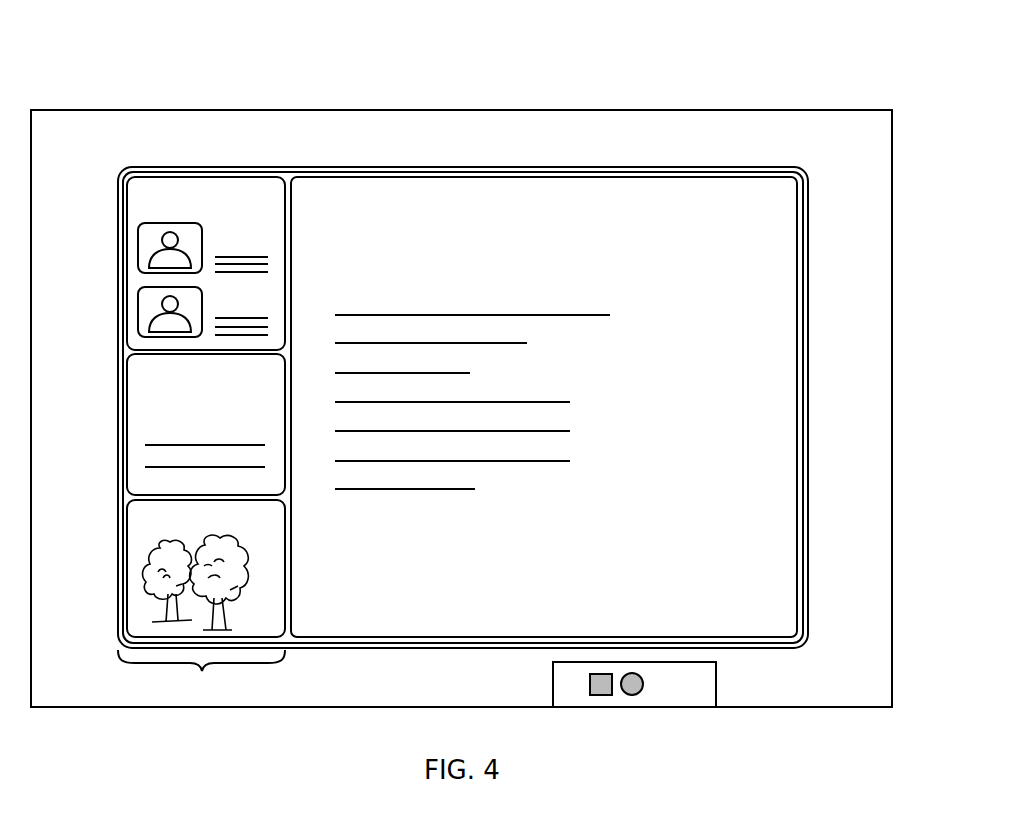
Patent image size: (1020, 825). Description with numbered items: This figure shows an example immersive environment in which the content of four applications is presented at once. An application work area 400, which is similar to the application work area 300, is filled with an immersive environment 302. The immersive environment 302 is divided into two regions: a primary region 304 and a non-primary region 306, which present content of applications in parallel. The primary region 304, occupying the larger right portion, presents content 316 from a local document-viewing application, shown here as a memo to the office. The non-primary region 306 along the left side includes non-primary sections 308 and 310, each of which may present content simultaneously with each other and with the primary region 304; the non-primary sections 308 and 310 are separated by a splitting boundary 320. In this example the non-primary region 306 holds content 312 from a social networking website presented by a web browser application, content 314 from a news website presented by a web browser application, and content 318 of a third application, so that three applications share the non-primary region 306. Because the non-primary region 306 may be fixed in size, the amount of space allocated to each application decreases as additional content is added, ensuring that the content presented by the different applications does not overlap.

The application work area 300 is at (99, 110).
The immersive environment 302 is at (281, 166).
The primary region 304 is at (755, 229).
The non-primary region 306 is at (223, 704).
The non-primary section 308 is at (269, 207).
The non-primary section 310 is at (269, 387).
The content from a social networking website 312 is at (167, 261).
The content from a news website 314 is at (167, 424).
The content from a local document-viewing application 316 is at (439, 255).
The content of a third application 318 is at (167, 568).
The splitting boundary 320 is at (269, 531).
The application work area 400 is at (797, 48).